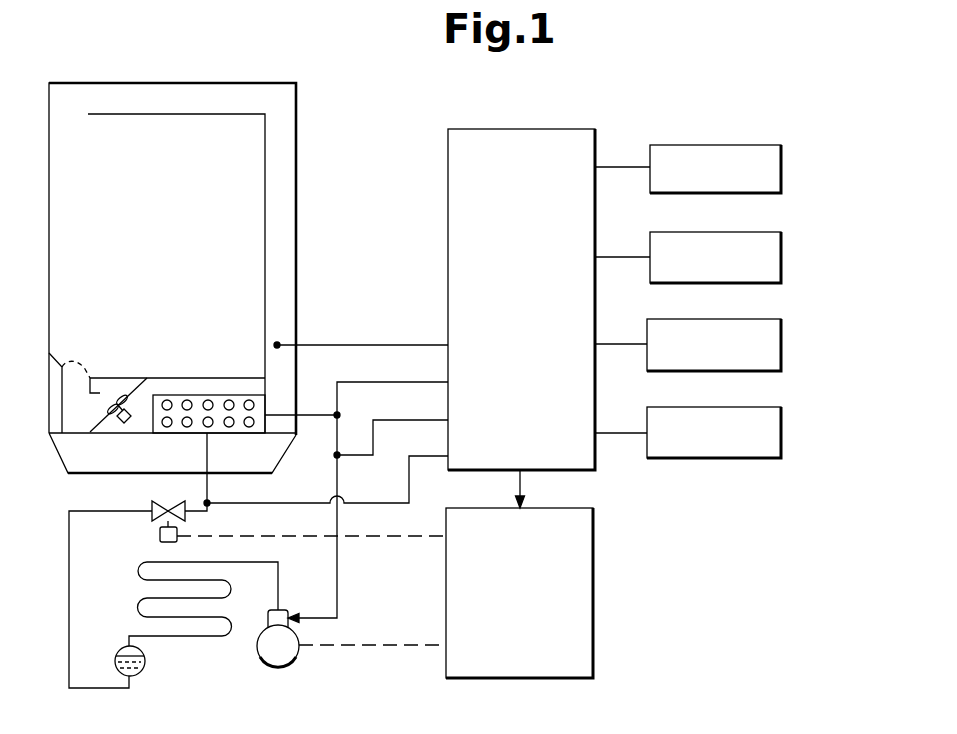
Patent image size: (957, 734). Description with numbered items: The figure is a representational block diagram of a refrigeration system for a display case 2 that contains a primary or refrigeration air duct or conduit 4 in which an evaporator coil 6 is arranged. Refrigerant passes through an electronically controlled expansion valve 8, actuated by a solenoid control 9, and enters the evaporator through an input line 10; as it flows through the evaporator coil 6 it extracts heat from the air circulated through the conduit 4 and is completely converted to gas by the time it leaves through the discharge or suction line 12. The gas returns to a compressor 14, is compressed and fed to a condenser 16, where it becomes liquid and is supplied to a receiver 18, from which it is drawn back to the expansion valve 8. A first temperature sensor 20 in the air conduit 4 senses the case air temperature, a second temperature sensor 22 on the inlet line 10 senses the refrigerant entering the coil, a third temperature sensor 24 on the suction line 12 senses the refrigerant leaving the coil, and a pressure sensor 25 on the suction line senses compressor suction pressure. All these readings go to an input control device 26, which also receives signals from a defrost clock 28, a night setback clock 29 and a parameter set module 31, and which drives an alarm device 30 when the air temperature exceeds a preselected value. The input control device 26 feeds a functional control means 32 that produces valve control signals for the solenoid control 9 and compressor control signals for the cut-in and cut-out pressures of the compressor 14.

The display case 2 is at (298, 93).
The primary or refrigeration air duct or conduit 4 is at (280, 233).
The evaporator coil 6 is at (183, 395).
The electronically controlled expansion valve 8 is at (152, 504).
The solenoid control 9 is at (160, 536).
The input line 10 is at (207, 449).
The discharge or suction line 12 is at (266, 410).
The compressor 14 is at (262, 660).
The condenser 16 is at (138, 569).
The receiver 18 is at (146, 668).
The first temperature sensor 20 is at (279, 343).
The second temperature sensor 22 is at (212, 500).
The third temperature sensor 24 is at (340, 412).
The pressure sensor 25 is at (339, 458).
The input control device 26 is at (448, 273).
The defrost clock 28 is at (783, 173).
The night setback clock 29 is at (783, 350).
The alarm device 30 is at (783, 437).
The parameter set module 31 is at (783, 263).
The functional control means 32 is at (596, 593).